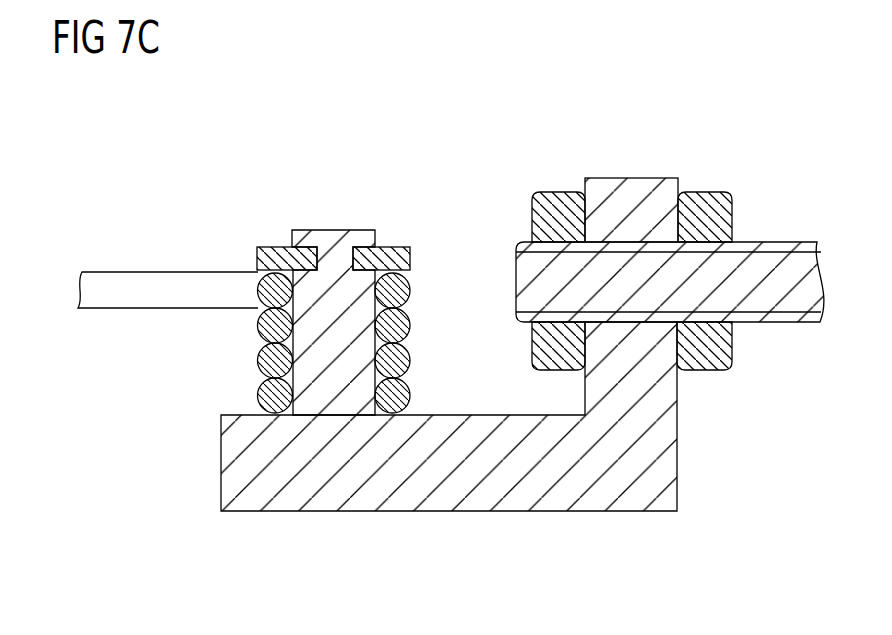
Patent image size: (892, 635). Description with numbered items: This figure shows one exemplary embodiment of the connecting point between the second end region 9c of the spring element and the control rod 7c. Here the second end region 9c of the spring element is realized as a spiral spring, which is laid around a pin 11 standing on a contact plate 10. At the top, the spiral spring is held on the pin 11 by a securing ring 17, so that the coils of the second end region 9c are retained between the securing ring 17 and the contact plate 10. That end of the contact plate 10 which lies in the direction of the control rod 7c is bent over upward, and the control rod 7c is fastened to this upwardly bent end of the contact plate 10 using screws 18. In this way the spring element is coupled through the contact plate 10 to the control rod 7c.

The control rod 7c is at (793, 263).
The second end region of the spring element 9c is at (260, 366).
The contact plate 10 is at (483, 496).
The pin 11 is at (332, 238).
The securing ring 17 is at (392, 258).
The screws 18 is at (563, 202).